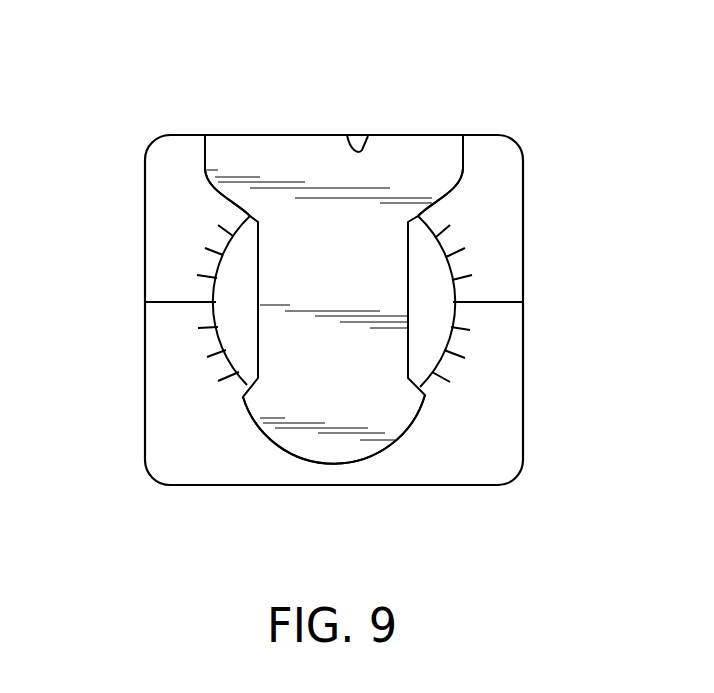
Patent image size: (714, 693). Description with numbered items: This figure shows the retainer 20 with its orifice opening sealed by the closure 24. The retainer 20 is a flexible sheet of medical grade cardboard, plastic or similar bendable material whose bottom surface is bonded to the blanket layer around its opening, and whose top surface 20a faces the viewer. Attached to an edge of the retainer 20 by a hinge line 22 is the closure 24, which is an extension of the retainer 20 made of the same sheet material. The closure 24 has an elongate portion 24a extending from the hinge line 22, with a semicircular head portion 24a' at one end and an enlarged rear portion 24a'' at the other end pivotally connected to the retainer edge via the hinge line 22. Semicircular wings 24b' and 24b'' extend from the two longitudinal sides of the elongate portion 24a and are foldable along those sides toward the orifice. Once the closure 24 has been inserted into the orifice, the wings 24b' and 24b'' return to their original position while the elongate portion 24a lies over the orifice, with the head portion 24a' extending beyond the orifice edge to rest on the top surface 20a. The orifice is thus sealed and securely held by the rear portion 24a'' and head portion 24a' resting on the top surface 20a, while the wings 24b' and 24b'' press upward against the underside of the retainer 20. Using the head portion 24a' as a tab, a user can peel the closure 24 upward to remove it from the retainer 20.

The retainer 20 is at (523, 398).
The top surface 20a is at (486, 455).
The hinge line 22 is at (365, 148).
The closure 24 is at (280, 335).
The elongate portion 24a is at (319, 305).
The semicircular head portion 24a' is at (326, 485).
The enlarged rear portion 24a'' is at (334, 117).
The semicircular wing 24b' is at (143, 300).
The semicircular wing 24b'' is at (530, 301).